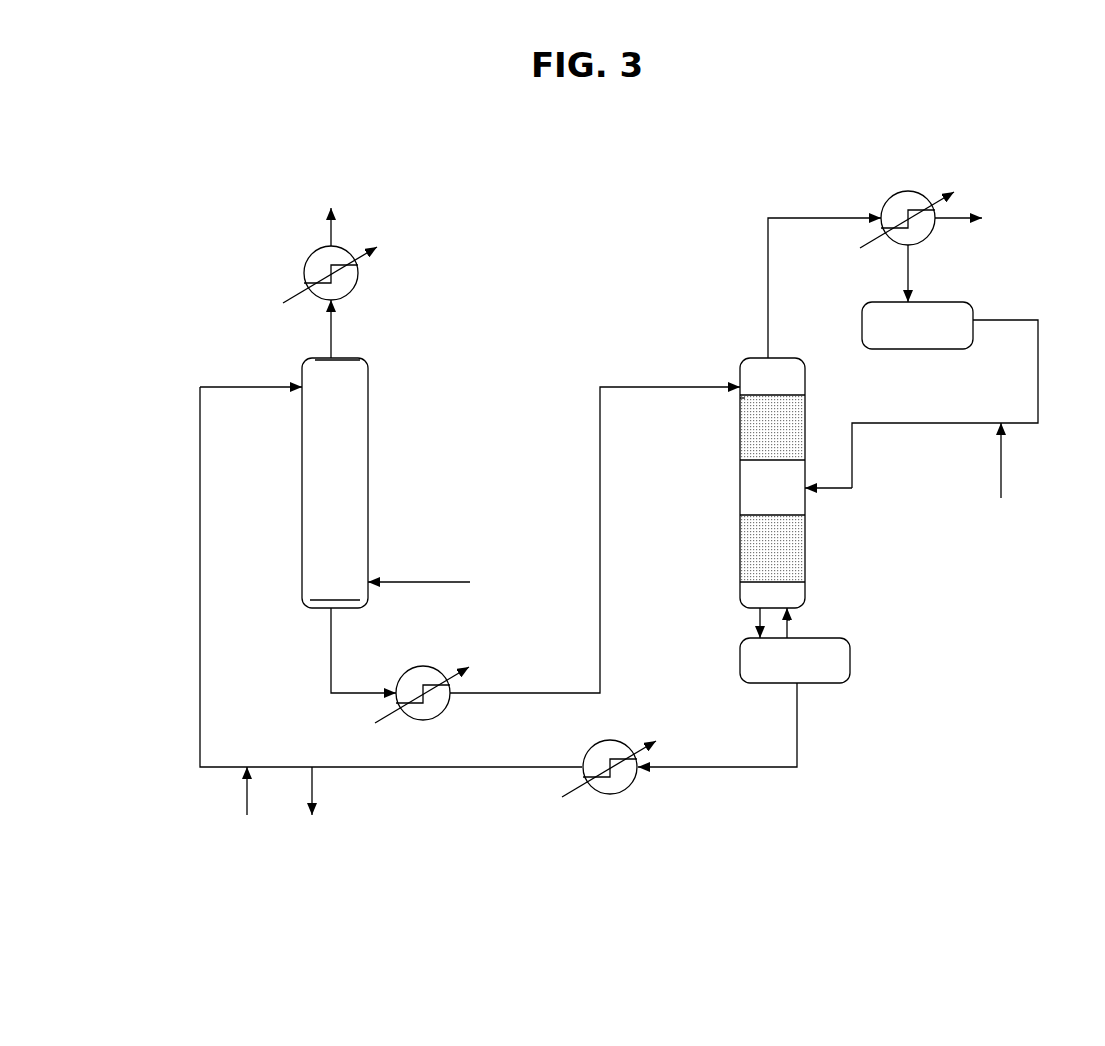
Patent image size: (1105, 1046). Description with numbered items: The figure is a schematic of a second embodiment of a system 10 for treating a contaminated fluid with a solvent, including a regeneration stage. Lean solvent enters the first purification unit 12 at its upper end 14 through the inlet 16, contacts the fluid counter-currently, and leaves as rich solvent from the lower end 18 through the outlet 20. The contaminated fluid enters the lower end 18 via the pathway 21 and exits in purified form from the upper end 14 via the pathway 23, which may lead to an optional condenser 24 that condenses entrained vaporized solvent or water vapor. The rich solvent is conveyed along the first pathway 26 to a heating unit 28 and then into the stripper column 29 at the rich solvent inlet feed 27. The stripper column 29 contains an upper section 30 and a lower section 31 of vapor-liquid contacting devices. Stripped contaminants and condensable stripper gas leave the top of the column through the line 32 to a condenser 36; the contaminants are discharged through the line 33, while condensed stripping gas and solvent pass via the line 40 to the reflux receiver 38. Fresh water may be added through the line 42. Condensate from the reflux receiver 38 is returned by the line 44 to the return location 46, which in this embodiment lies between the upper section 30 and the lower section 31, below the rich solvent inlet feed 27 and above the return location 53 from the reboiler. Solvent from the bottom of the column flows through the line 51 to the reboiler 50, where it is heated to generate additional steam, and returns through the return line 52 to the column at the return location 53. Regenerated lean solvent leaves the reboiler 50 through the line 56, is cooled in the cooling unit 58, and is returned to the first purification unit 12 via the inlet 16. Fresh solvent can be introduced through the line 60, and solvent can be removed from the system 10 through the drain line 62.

The system 10 is at (555, 230).
The first purification unit 12 is at (360, 405).
The upper end 14 is at (322, 368).
The inlet 16 is at (293, 382).
The lower end 18 is at (318, 600).
The outlet 20 is at (328, 610).
The pathway 21 is at (452, 580).
The pathway 23 is at (333, 228).
The condenser 24 is at (312, 277).
The first pathway 26 is at (612, 385).
The rich solvent inlet feed 27 is at (736, 397).
The heating unit 28 is at (432, 665).
The stripper column 29 is at (762, 372).
The upper section 30 is at (746, 437).
The lower section 31 is at (760, 554).
The line 32 is at (768, 275).
The line 33 is at (945, 232).
The condenser 36 is at (895, 198).
The reflux receiver 38 is at (918, 345).
The line 40 is at (905, 264).
The line 42 is at (1000, 446).
The line 44 is at (916, 425).
The return location 46 is at (810, 490).
The reboiler 50 is at (852, 665).
The line 51 is at (755, 620).
The return line 52 is at (790, 628).
The return location 53 is at (790, 610).
The line 56 is at (200, 675).
The cooling unit 58 is at (618, 795).
The line 60 is at (238, 800).
The drain line 62 is at (320, 798).